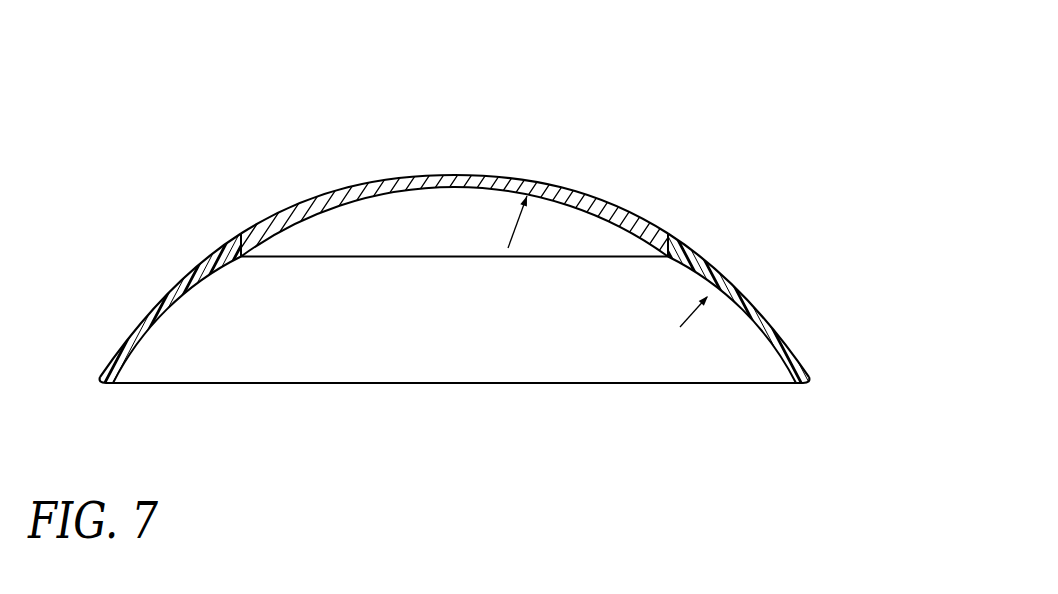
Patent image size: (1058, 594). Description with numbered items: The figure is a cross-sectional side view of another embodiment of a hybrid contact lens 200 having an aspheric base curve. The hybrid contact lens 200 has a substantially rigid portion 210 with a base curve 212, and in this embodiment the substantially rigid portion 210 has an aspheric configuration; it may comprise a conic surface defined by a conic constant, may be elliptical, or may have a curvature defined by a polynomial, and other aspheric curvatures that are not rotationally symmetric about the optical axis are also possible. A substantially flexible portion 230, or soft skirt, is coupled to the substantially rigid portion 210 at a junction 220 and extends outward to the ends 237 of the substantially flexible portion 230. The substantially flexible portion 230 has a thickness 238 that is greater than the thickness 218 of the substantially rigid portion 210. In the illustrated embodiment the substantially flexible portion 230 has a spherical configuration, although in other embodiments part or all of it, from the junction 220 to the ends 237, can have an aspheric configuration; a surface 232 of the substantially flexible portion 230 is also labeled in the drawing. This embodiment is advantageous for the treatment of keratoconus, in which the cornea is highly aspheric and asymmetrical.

The hybrid contact lens 200 is at (677, 66).
The substantially rigid portion 210 is at (437, 175).
The base curve 212 is at (310, 201).
The thickness of the substantially rigid portion 218 is at (537, 179).
The junction 220 is at (239, 230).
The substantially flexible portion 230 is at (753, 304).
The peripheral zone outer surface 232 is at (787, 343).
The ends of the substantially flexible portion 237 is at (104, 390).
The thickness of the substantially flexible portion 238 is at (731, 277).